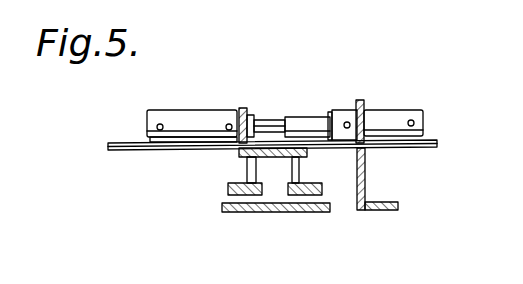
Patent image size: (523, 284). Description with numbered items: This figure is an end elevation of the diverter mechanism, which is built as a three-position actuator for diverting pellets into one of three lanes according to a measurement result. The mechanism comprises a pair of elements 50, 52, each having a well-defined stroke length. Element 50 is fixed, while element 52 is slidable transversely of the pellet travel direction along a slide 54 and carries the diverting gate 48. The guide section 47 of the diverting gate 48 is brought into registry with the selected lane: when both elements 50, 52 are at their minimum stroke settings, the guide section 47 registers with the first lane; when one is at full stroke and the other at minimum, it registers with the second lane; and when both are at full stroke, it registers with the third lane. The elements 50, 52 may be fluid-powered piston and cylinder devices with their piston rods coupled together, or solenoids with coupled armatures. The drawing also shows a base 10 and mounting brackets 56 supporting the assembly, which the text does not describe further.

The base plate 10 is at (308, 212).
The guide section 47 is at (278, 190).
The diverting gate 48 is at (222, 164).
The fixed element 50 is at (388, 112).
The slidable element 52 is at (186, 113).
The slide 54 is at (121, 143).
The mounting brackets 56 is at (230, 188).